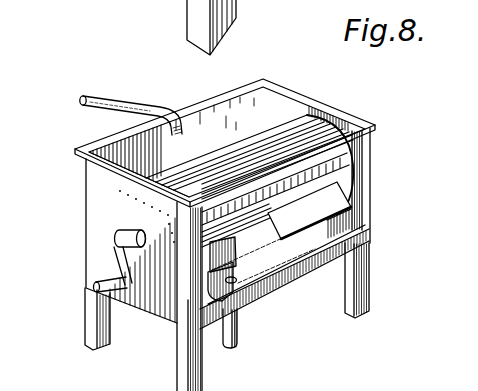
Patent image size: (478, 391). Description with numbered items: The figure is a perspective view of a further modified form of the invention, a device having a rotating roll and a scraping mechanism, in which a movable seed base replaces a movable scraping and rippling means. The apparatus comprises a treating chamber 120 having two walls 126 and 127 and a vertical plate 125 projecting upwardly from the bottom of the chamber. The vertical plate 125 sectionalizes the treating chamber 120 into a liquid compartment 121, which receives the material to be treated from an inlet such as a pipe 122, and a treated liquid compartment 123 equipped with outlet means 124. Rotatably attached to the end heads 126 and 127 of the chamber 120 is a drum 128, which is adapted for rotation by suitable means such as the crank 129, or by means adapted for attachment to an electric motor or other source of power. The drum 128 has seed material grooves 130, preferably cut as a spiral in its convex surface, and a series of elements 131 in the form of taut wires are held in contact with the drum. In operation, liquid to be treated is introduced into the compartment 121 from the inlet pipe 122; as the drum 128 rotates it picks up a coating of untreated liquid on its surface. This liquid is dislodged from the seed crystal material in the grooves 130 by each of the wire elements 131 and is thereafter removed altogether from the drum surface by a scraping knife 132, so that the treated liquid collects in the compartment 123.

The treating chamber 120 is at (205, 118).
The liquid compartment 121 is at (147, 163).
The inlet pipe 122 is at (107, 99).
The treated liquid compartment 123 is at (247, 272).
The outlet means 124 is at (240, 342).
The vertical plate 125 is at (212, 262).
The wall (end head) 126 is at (110, 167).
The wall (end head) 127 is at (281, 88).
The drum 128 is at (278, 242).
The crank 129 is at (98, 283).
The seed material grooves 130 is at (356, 165).
The wire elements 131 is at (338, 127).
The scraping knife 132 is at (358, 210).